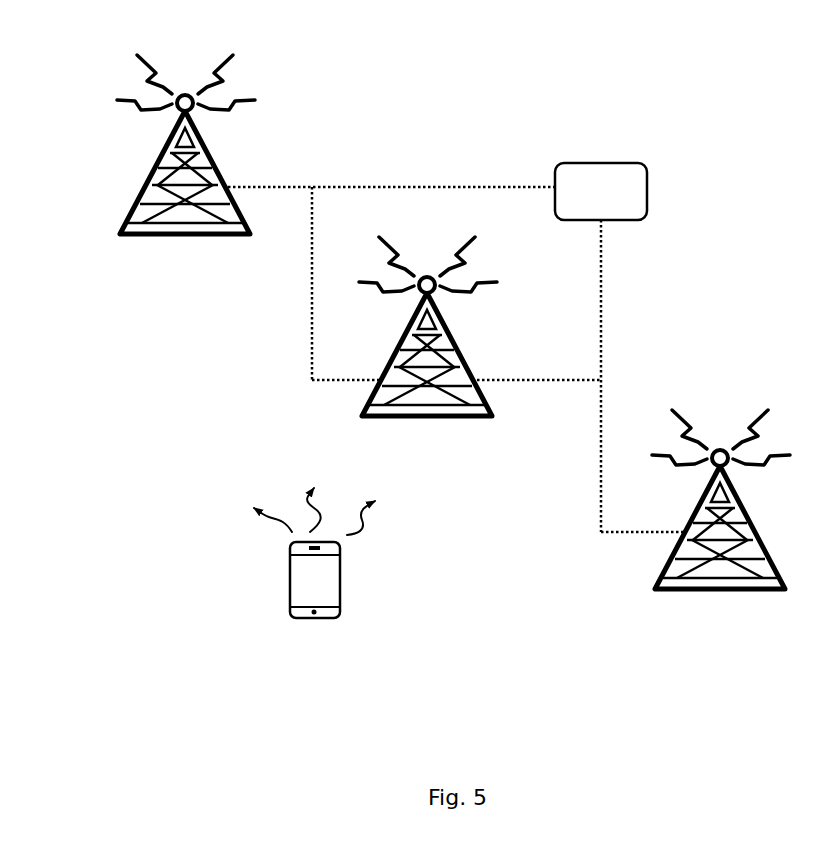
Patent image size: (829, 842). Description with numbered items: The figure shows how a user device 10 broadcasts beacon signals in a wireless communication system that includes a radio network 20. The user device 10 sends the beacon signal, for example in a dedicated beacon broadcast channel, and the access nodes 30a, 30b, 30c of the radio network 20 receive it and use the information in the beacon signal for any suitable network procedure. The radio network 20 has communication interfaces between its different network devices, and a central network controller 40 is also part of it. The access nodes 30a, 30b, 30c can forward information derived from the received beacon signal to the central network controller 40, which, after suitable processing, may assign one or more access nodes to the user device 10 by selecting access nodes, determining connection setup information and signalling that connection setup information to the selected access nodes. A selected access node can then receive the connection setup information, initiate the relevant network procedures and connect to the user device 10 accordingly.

The user device 10 is at (280, 625).
The radio network 20 is at (608, 55).
The access node 30a is at (108, 252).
The access node 30b is at (353, 425).
The access node 30c is at (652, 603).
The central network controller 40 is at (601, 191).